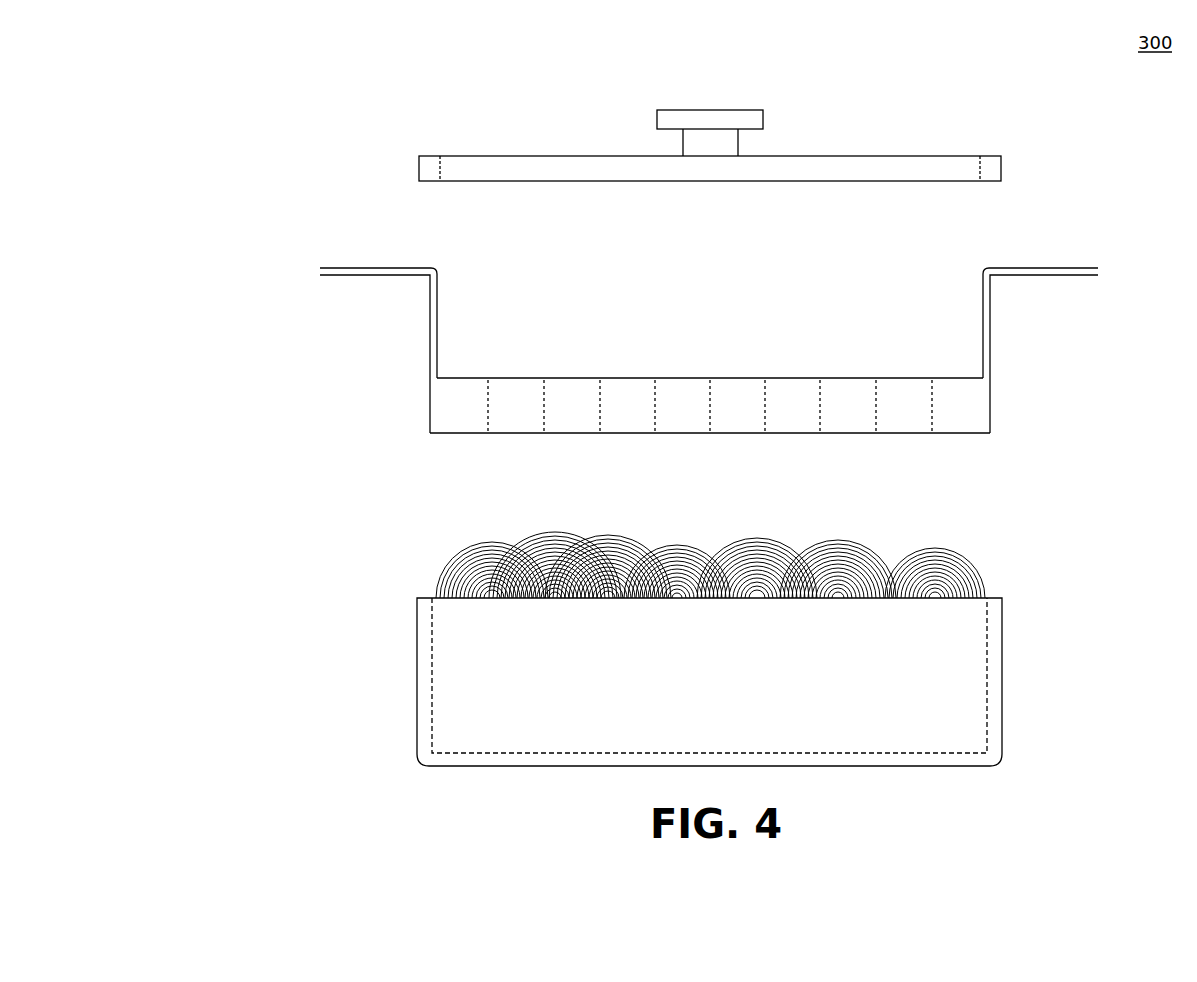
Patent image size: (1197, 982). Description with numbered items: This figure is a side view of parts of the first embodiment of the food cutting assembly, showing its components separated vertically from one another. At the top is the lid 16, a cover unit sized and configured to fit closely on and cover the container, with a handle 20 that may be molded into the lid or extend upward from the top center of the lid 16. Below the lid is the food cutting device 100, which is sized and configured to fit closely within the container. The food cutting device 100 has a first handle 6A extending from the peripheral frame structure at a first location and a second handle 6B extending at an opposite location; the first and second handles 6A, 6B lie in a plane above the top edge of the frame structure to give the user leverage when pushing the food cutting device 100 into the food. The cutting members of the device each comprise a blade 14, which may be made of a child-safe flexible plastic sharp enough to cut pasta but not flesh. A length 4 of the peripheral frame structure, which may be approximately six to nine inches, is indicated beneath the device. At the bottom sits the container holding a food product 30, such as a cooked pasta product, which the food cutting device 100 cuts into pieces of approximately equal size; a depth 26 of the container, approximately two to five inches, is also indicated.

The lid 16 is at (893, 149).
The handle 20 is at (716, 111).
The food cutting device 100 is at (615, 316).
The first handle 6A is at (384, 268).
The second handle 6B is at (1050, 268).
The blade 14 is at (656, 410).
The length 4 is at (978, 447).
The food product 30 is at (957, 552).
The depth 26 is at (382, 597).